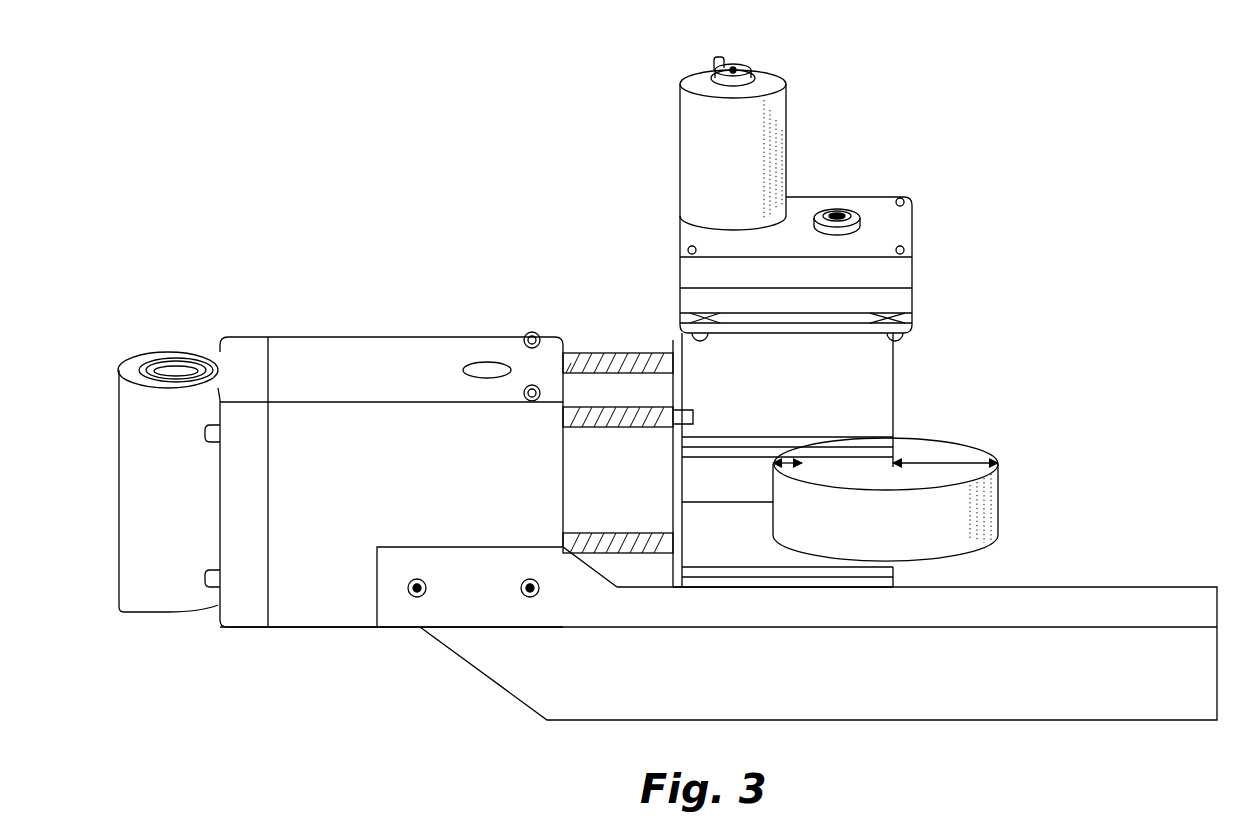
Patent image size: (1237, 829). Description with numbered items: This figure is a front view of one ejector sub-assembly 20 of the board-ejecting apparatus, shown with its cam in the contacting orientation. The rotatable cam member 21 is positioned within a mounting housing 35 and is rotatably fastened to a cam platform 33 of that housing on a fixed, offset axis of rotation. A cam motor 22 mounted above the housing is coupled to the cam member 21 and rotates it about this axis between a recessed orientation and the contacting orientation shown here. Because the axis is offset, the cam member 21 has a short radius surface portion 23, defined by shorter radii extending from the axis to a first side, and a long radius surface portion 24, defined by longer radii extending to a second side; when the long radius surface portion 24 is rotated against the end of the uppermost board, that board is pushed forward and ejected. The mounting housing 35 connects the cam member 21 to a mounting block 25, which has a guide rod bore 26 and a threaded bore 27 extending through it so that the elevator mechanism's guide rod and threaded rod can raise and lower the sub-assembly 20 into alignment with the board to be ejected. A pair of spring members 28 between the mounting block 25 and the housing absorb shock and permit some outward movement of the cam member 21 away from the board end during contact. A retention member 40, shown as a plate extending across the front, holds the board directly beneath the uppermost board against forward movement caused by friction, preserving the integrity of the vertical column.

The ejector sub-assembly 20 is at (505, 205).
The rotatable cam member 21 is at (942, 438).
The cam motor 22 is at (760, 145).
The short radius surface portion 23 is at (792, 510).
The long radius surface portion 24 is at (990, 500).
The mounting block 25 is at (325, 368).
The guide rod bore 26 is at (490, 362).
The threaded bore 27 is at (170, 355).
The spring members 28 is at (618, 430).
The cam platform 33 is at (893, 572).
The mounting housing 35 is at (1017, 305).
The retention member 40 is at (1020, 690).